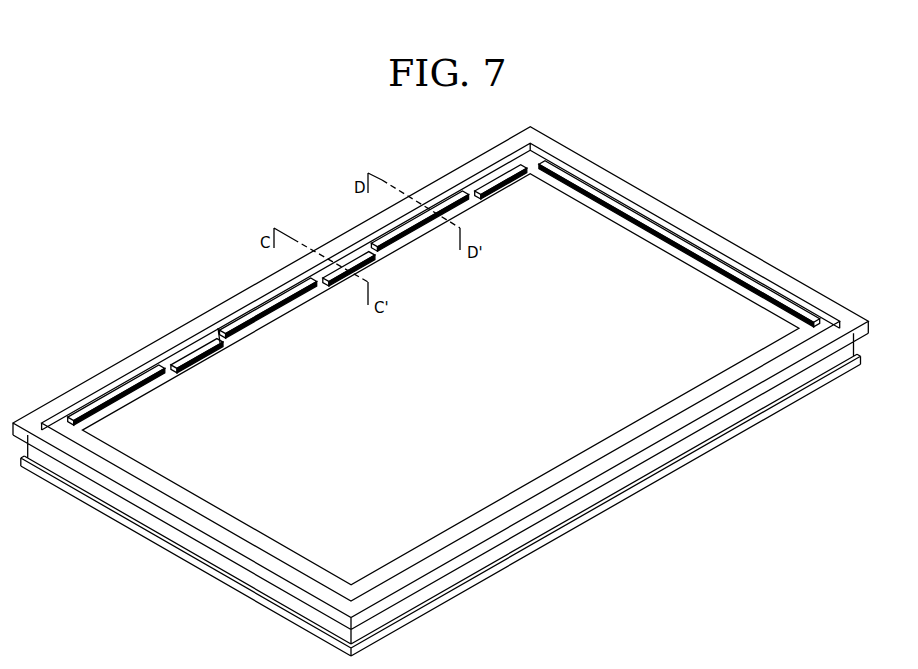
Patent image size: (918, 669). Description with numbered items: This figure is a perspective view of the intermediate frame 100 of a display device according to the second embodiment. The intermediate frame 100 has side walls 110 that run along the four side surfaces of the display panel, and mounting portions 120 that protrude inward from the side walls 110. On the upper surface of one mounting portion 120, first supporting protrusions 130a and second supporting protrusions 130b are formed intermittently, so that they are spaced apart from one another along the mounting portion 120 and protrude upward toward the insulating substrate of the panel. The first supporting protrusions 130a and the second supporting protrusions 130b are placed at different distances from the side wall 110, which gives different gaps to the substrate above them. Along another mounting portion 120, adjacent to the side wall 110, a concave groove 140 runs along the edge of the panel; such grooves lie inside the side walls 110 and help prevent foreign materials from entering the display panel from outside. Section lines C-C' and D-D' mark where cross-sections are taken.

The intermediate frame 100 is at (206, 263).
The side wall 110 is at (131, 364).
The mounting portion 120 is at (219, 330).
The first supporting protrusion 130a is at (84, 402).
The second supporting protrusion 130b is at (181, 356).
The concave groove 140 is at (624, 212).